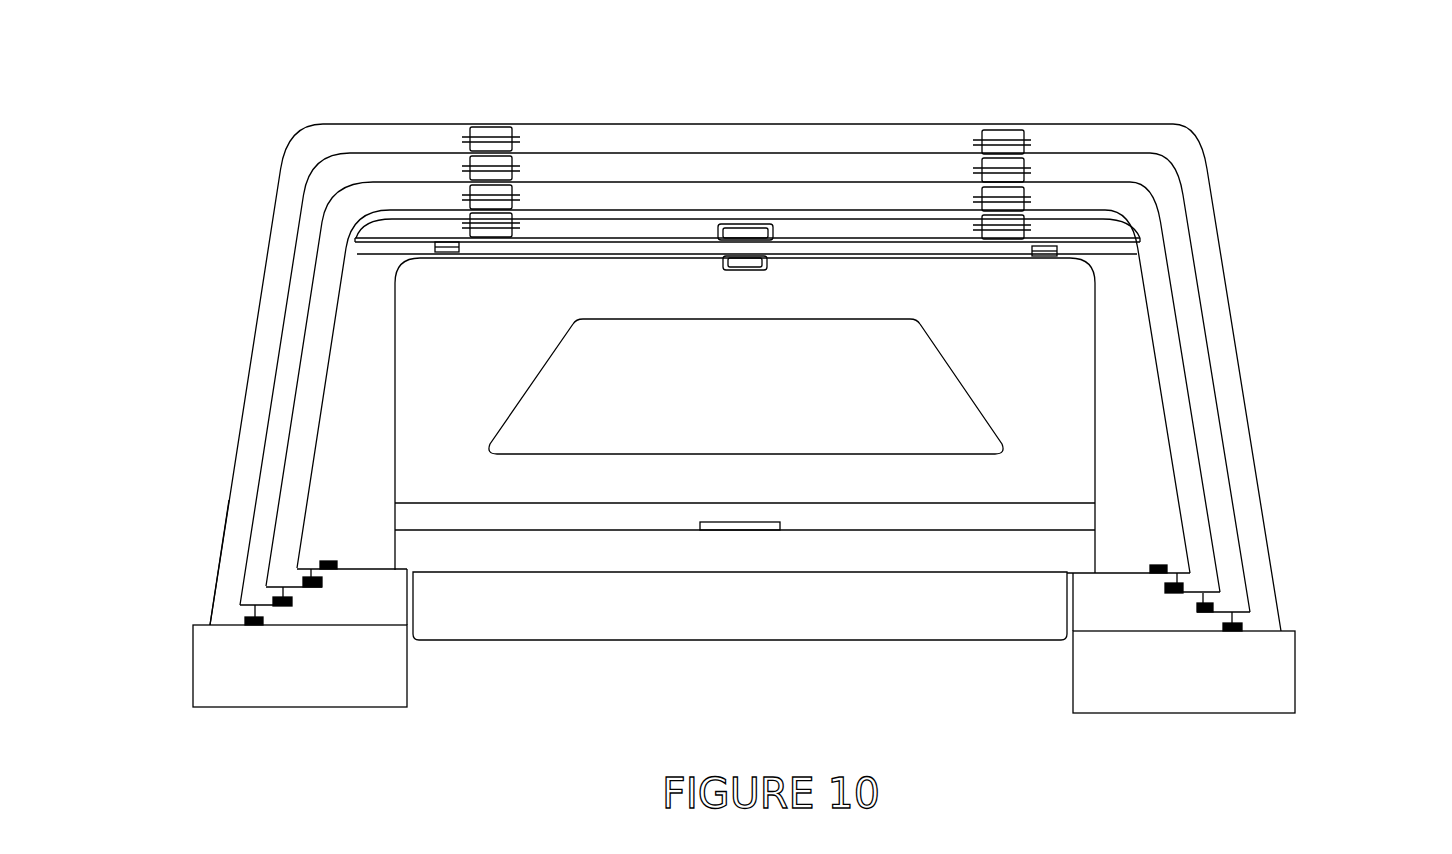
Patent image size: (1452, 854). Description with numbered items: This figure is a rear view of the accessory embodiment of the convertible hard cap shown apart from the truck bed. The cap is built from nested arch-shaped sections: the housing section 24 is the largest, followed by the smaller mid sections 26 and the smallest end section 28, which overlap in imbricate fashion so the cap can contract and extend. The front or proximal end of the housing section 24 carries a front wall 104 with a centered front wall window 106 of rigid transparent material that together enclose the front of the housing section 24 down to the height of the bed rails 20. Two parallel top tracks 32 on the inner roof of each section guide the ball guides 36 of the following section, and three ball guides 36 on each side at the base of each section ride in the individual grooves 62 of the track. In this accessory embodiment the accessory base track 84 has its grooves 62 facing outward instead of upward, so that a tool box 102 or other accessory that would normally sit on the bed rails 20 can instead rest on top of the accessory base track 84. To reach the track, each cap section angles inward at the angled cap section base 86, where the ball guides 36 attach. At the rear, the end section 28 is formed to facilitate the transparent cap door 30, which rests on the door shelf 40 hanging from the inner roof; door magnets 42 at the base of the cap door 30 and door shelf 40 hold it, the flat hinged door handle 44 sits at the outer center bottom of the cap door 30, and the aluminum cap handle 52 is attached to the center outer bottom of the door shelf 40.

The bed rails 20 is at (280, 653).
The housing section 24 is at (1240, 340).
The mid sections 26 is at (1178, 405).
The end section 28 is at (385, 212).
The cap door 30 is at (1048, 243).
The top track 32 is at (498, 158).
The ball guide 36 is at (1200, 613).
The door shelf 40 is at (372, 240).
The door magnet 42 is at (443, 257).
The door handle 44 is at (773, 230).
The cap handle 52 is at (745, 270).
The groove 62 is at (1193, 595).
The accessory base track 84 is at (1213, 623).
The angled cap section base 86 is at (215, 608).
The tool box 102 is at (792, 587).
The front wall 104 is at (408, 363).
The front wall window 106 is at (543, 423).